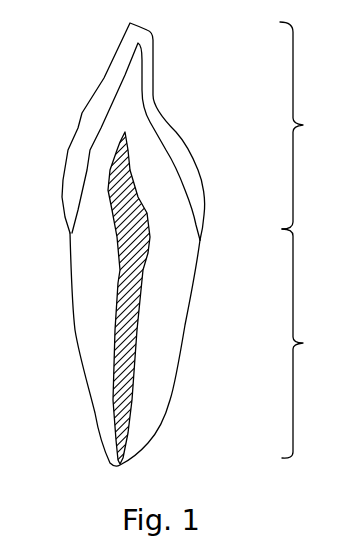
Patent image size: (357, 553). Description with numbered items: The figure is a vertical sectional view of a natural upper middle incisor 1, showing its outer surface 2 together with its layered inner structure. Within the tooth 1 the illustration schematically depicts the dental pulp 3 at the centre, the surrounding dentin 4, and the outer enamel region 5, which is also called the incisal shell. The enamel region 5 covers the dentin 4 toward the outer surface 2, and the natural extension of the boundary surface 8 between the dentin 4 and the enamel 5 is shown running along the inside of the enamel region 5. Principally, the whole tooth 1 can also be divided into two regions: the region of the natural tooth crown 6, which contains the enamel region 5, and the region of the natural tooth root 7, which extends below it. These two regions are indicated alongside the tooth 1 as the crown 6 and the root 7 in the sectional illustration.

The upper middle incisor 1 is at (198, 96).
The outer surface 2 is at (82, 113).
The dental pulp 3 is at (137, 248).
The dentin 4 is at (168, 195).
The enamel region 5 is at (112, 78).
The natural tooth crown 6 is at (301, 125).
The natural tooth root 7 is at (302, 343).
The boundary surface 8 is at (148, 122).